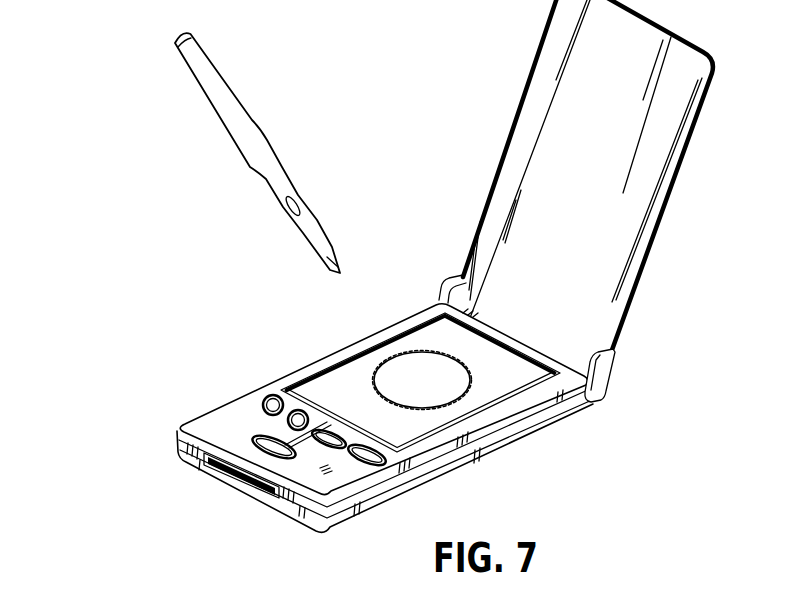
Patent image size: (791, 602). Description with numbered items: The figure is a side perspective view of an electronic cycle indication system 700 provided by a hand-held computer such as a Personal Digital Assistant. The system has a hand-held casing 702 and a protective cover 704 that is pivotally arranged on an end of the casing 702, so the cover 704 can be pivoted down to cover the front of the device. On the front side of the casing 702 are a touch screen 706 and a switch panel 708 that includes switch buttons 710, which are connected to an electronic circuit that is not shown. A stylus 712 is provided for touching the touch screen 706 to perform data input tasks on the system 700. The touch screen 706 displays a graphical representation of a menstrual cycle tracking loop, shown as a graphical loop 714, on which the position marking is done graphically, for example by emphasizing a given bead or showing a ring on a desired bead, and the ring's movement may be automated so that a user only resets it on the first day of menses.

The electronic cycle indication system 700 is at (136, 175).
The hand-held casing 702 is at (236, 420).
The protective cover 704 is at (528, 148).
The touch screen 706 is at (497, 390).
The switch panel 708 is at (302, 460).
The switch buttons 710 is at (296, 410).
The stylus 712 is at (250, 130).
The graphical loop 714 is at (417, 342).